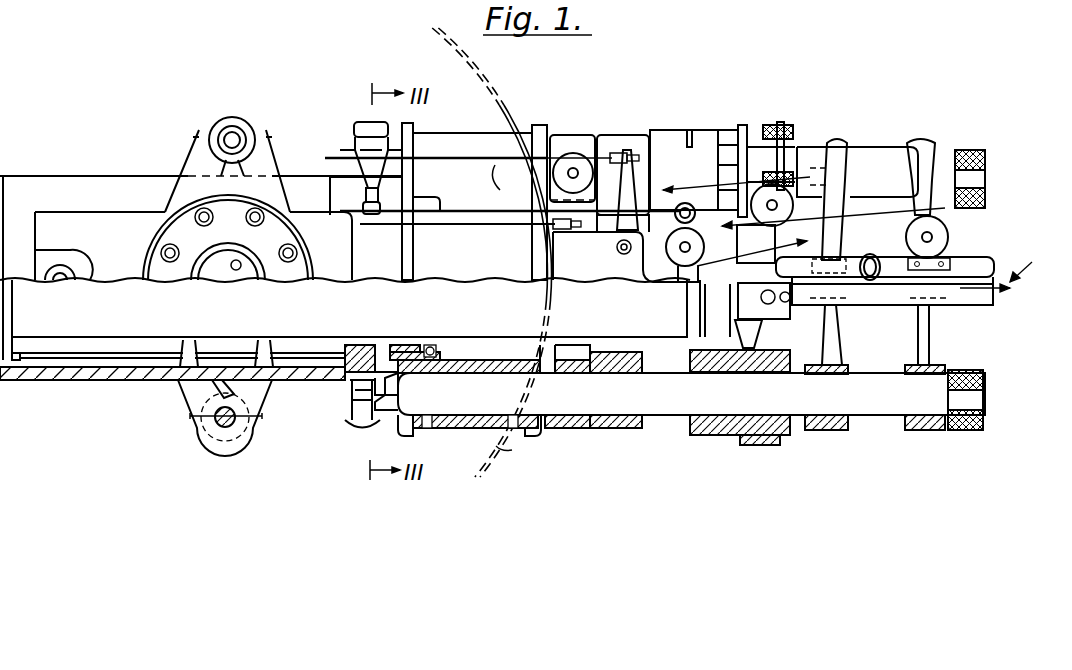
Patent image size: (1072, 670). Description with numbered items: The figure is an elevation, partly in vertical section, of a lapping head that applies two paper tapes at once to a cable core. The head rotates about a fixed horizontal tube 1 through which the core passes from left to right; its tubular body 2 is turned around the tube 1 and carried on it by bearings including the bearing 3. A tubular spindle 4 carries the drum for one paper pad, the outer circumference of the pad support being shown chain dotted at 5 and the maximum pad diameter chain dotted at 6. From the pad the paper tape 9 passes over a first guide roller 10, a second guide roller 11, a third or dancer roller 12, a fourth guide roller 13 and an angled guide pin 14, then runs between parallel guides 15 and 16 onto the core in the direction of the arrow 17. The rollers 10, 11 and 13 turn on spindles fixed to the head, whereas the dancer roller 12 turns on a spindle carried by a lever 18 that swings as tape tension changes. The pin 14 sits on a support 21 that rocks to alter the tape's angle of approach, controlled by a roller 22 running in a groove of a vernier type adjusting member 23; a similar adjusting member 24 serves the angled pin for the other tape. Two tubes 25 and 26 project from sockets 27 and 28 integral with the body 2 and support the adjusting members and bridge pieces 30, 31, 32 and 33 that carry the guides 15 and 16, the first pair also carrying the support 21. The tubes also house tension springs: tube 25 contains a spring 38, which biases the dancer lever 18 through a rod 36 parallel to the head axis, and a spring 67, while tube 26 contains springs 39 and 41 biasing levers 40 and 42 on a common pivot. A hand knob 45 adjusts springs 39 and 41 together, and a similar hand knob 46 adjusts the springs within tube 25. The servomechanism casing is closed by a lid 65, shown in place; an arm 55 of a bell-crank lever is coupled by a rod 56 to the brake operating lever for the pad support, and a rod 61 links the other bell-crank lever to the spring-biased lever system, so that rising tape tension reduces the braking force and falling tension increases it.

The fixed horizontal tube 1 is at (648, 322).
The tubular body 2 is at (112, 208).
The bearing 3 is at (410, 345).
The tubular spindle 4 is at (214, 262).
The outer circumference of the pad support 5 is at (508, 103).
The maximum diameter of the pad 6 is at (508, 450).
The paper tape 9 is at (684, 190).
The first guide roller 10 is at (573, 152).
The second guide roller 11 is at (790, 195).
The dancer roller 12 is at (704, 247).
The fourth guide roller 13 is at (949, 238).
The angled guide pin 14 is at (880, 252).
The parallel guide 15 is at (982, 270).
The parallel guide 16 is at (986, 292).
The arrow 17 is at (1032, 262).
The lever 18 is at (704, 272).
The support 21 is at (766, 302).
The roller 22 is at (740, 352).
The vernier type adjusting member 23 is at (766, 455).
The adjusting member 24 is at (692, 128).
The tube 25 is at (884, 146).
The tube 26 is at (894, 416).
The socket 27 is at (476, 140).
The socket 28 is at (490, 428).
The bridge piece 30 is at (843, 222).
The bridge piece 31 is at (840, 348).
The bridge piece 32 is at (943, 218).
The bridge piece 33 is at (932, 348).
The rod 36 is at (472, 205).
The tension spring 38 is at (400, 133).
The tension spring 39 is at (400, 398).
The lever 40 is at (346, 416).
The tension spring 41 is at (400, 378).
The lever 42 is at (348, 392).
The hand knob 45 is at (985, 368).
The hand knob 46 is at (968, 150).
The arm 55 is at (637, 160).
The rod 56 is at (508, 178).
The rod 61 is at (482, 226).
The lid 65 is at (604, 268).
The spring 67 is at (405, 172).